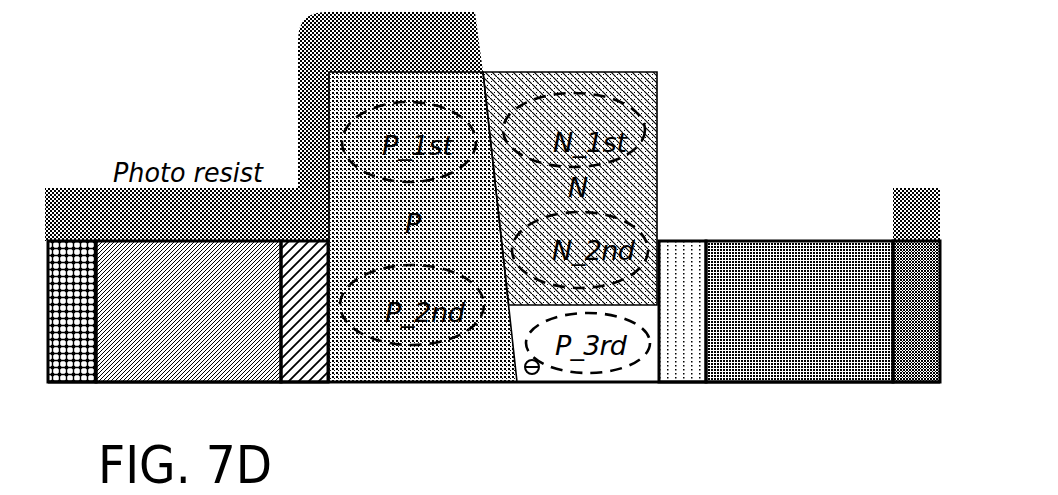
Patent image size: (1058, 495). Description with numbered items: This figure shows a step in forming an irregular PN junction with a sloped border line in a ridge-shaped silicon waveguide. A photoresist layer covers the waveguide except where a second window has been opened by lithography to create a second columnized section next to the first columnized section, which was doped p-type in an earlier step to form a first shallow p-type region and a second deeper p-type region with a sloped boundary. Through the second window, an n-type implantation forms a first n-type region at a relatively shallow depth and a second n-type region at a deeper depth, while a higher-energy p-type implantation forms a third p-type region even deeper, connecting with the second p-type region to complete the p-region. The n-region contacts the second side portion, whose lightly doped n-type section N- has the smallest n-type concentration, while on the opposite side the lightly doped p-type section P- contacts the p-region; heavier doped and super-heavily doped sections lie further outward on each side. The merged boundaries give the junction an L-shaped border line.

The P− section P- is at (304, 331).
The N− section N- is at (682, 332).